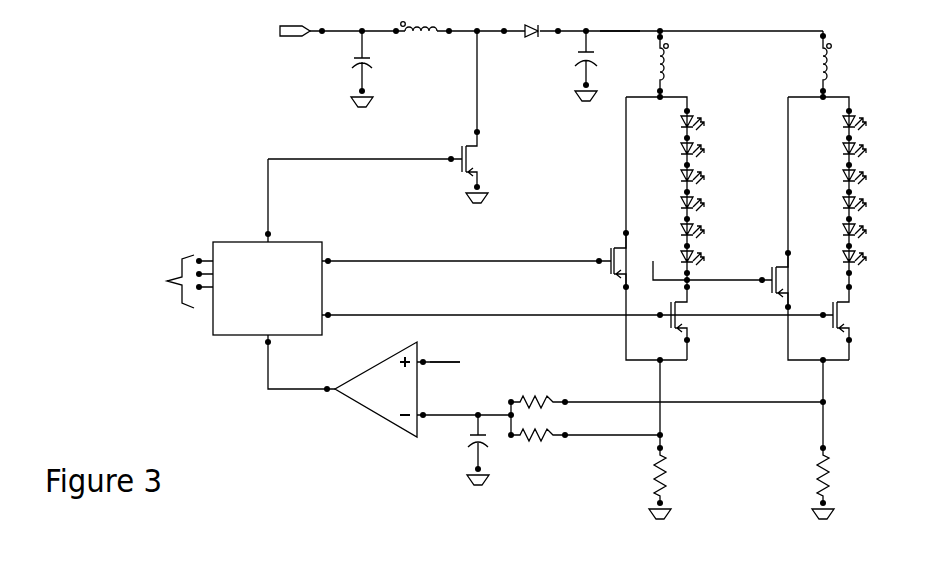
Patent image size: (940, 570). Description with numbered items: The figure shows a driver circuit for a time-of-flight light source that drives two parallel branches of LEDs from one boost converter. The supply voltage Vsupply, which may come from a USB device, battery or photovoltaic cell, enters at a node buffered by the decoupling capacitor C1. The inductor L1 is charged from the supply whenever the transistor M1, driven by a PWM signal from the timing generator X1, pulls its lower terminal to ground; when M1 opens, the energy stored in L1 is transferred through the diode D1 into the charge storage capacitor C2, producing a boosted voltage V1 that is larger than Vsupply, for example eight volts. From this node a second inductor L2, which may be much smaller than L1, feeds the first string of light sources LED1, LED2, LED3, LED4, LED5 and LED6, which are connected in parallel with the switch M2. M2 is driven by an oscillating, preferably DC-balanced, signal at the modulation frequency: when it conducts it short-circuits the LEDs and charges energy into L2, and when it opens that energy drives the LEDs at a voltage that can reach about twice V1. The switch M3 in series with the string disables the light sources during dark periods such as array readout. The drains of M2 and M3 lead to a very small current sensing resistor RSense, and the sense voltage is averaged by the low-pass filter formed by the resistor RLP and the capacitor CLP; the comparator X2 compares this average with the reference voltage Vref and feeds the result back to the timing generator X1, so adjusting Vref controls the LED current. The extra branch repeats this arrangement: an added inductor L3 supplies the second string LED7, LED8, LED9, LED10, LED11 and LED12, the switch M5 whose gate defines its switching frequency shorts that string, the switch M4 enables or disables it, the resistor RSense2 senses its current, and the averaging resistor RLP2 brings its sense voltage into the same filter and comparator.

The supply voltage Vsupply is at (269, 31).
The inductor L1 is at (419, 19).
The decoupling capacitor C1 is at (372, 69).
The diode D1 is at (531, 39).
The boosted voltage V1 is at (620, 23).
The charge storage capacitor C2 is at (596, 66).
The second inductor L2 is at (672, 64).
The extra inductor L3 is at (835, 64).
The transistor M1 is at (379, 117).
The switch M2 is at (684, 261).
The third electronic switch M3 is at (677, 316).
The extra switch M4 is at (841, 316).
The extra switch M5 is at (780, 281).
The light emitting diode LED1 is at (709, 123).
The light emitting diode LED2 is at (709, 150).
The light emitting diode LED3 is at (709, 177).
The light emitting diode LED4 is at (709, 204).
The light emitting diode LED5 is at (709, 231).
The light emitting diode LED6 is at (709, 259).
The light emitting diode LED7 is at (871, 123).
The light emitting diode LED8 is at (871, 150).
The light emitting diode LED9 is at (871, 177).
The light emitting diode LED10 is at (875, 204).
The light emitting diode LED11 is at (875, 231).
The light emitting diode LED12 is at (875, 259).
The timing generator X1 is at (455, 274).
The comparator X2 is at (417, 389).
The reference voltage Vref is at (460, 362).
The low-pass filter capacitor CLP is at (465, 449).
The low-pass filter resistor RLP is at (587, 428).
The averaging resistor RLP2 is at (668, 395).
The current sensing resistor RSense is at (639, 440).
The current sense resistor RSense2 is at (799, 440).